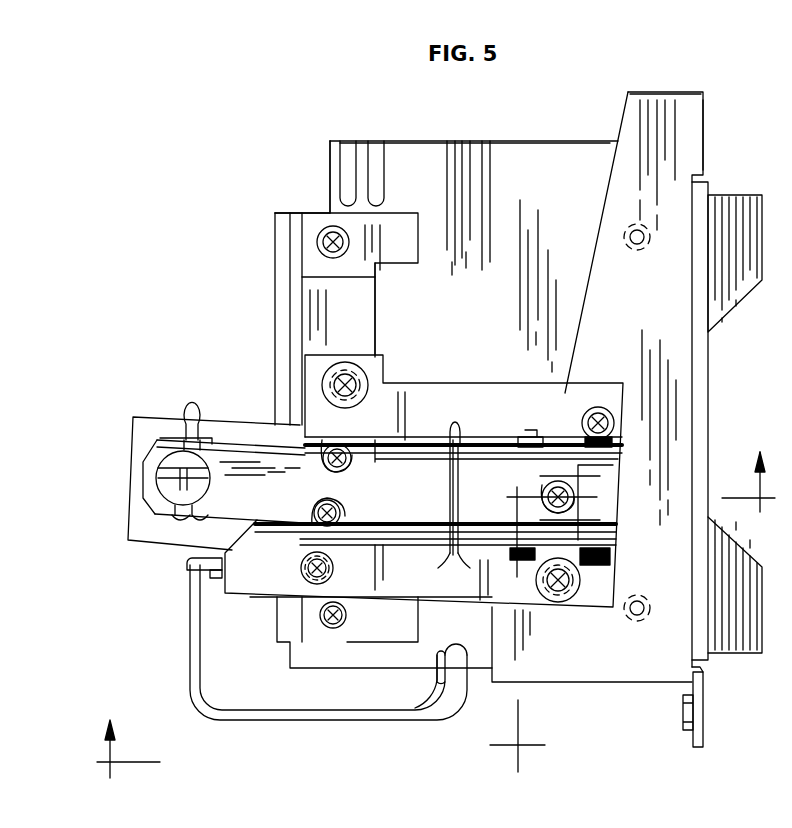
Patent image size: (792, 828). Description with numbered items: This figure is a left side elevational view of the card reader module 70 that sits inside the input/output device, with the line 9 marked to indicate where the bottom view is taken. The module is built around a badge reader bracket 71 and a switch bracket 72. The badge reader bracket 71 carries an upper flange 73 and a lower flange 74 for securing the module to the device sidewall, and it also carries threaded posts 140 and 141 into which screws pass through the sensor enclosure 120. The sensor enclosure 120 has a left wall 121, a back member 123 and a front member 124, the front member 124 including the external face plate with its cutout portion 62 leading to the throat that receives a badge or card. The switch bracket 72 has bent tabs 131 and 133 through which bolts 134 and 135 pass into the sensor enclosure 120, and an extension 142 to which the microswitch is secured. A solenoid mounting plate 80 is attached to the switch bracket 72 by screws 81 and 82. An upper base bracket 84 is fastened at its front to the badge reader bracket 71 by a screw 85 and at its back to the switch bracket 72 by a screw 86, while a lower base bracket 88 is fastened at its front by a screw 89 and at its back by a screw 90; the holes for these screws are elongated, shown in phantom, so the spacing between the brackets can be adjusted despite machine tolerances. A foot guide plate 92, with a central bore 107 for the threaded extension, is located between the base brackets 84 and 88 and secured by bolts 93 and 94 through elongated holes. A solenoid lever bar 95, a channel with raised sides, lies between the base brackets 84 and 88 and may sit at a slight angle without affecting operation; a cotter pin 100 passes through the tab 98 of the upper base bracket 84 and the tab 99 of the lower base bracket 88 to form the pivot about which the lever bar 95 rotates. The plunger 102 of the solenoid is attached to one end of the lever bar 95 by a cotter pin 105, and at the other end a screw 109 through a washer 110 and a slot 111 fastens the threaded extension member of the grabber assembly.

The card reader module 70 is at (392, 126).
The badge reader bracket 71 is at (655, 95).
The upper flange 73 is at (705, 133).
The left wall 121 is at (533, 157).
The front member 124 is at (712, 195).
The cutout portion 62 is at (712, 380).
The lower flange 74 is at (705, 712).
The sensor enclosure 120 is at (330, 198).
The bent tab 131 is at (398, 222).
The back member 123 is at (276, 238).
The bolt 134 is at (326, 247).
The switch bracket 72 is at (368, 300).
The threaded post 140 is at (634, 250).
The threaded post 141 is at (634, 621).
The upper base bracket 84 is at (500, 390).
The screw 86 is at (352, 378).
The screw 85 is at (598, 412).
The bolt 94 is at (610, 440).
The bolt 93 is at (534, 430).
The foot guide plate 92 is at (615, 466).
The screw 81 is at (350, 462).
The screw 82 is at (340, 513).
The tab 98 is at (440, 430).
The tab 99 is at (460, 557).
The cotter pin 100 is at (450, 503).
The screw 109 is at (548, 490).
The central bore 107 is at (572, 500).
The washer 110 is at (575, 480).
The slot 111 is at (582, 522).
The solenoid mounting plate 80 is at (135, 524).
The solenoid lever bar 95 is at (240, 432).
The plunger 102 is at (175, 465).
The cotter pin 105 is at (186, 410).
The screw 90 is at (305, 566).
The screw 89 is at (575, 582).
The lower base bracket 88 is at (590, 607).
The extension 142 is at (212, 578).
The bent tab 133 is at (345, 650).
The bolt 135 is at (322, 616).
The section line 9— 9 is at (436, 604).